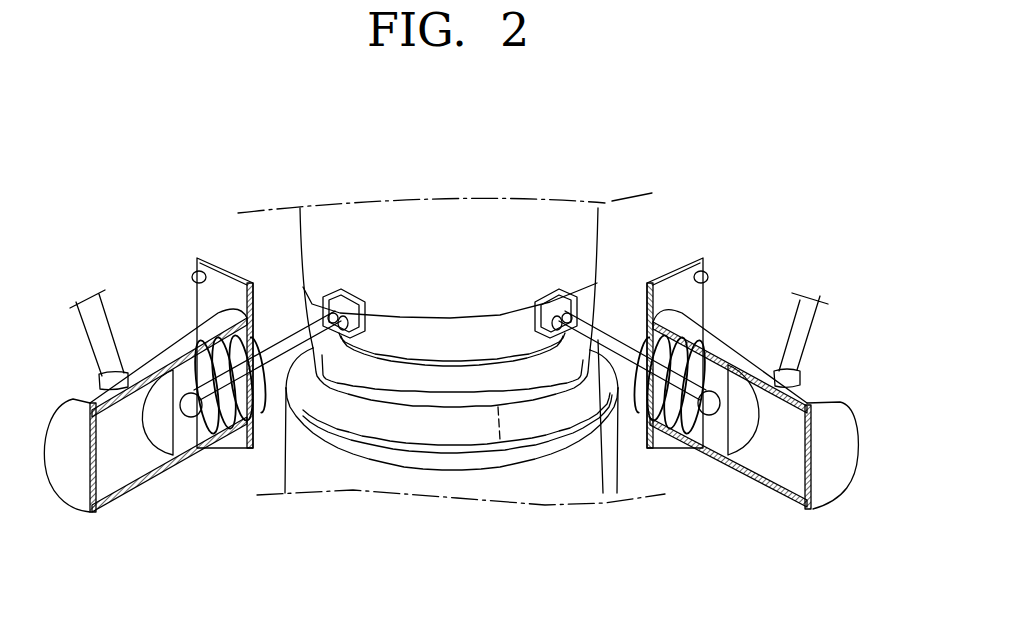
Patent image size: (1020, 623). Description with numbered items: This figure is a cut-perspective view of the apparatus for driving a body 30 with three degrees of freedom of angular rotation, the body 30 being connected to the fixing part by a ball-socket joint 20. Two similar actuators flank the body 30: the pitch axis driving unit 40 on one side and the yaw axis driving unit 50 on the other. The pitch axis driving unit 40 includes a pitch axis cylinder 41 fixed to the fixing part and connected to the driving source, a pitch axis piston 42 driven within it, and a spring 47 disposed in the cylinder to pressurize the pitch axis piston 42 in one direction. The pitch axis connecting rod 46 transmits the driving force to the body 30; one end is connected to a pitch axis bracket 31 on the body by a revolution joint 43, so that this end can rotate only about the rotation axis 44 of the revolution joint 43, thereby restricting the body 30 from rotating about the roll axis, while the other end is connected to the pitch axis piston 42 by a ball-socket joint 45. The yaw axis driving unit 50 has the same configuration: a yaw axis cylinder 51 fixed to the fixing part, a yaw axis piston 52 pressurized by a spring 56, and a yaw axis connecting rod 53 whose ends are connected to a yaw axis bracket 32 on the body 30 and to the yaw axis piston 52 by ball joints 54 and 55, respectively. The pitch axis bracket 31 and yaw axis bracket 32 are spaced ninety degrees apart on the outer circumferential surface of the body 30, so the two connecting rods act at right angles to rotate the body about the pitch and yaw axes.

The ball-socket joint 20 is at (437, 428).
The body 30 is at (438, 230).
The pitch axis bracket 31 is at (305, 290).
The yaw axis bracket 32 is at (545, 318).
The pitch axis driving unit 40 is at (691, 356).
The pitch axis cylinder 41 is at (753, 478).
The pitch axis piston 42 is at (722, 437).
The revolution joint 43 is at (592, 282).
The rotation axis 44 is at (550, 335).
The ball-socket joint 45 is at (698, 437).
The pitch axis connecting rod 46 is at (603, 493).
The spring 47 is at (658, 447).
The yaw axis driving unit 50 is at (204, 357).
The yaw axis cylinder 51 is at (147, 480).
The yaw axis piston 52 is at (180, 435).
The yaw axis connecting rod 53 is at (300, 345).
The ball joint 54 is at (327, 303).
The ball joint 55 is at (203, 437).
The spring 56 is at (220, 427).